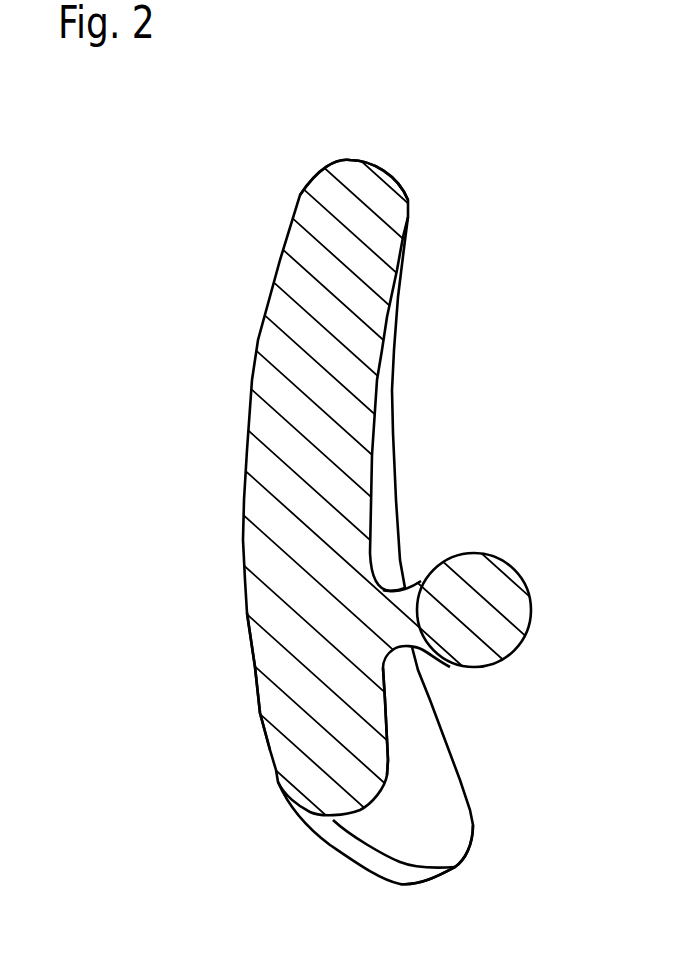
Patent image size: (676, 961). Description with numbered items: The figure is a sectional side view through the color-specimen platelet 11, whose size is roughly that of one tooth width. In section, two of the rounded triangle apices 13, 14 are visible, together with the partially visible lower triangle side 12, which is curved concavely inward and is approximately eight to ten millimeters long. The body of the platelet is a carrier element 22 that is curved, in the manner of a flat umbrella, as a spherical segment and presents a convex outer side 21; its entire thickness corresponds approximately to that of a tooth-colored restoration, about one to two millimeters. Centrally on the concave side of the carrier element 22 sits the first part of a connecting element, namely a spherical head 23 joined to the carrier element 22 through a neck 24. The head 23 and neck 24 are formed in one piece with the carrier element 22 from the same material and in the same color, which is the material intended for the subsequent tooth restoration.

The color-specimen platelet 11 is at (237, 237).
The triangle side 12 is at (393, 433).
The triangle apex 13 is at (350, 158).
The triangle apex 14 is at (455, 867).
The convex outer side 21 is at (260, 713).
The carrier element 22 is at (368, 732).
The spherical head 23 is at (497, 598).
The neck 24 is at (405, 613).